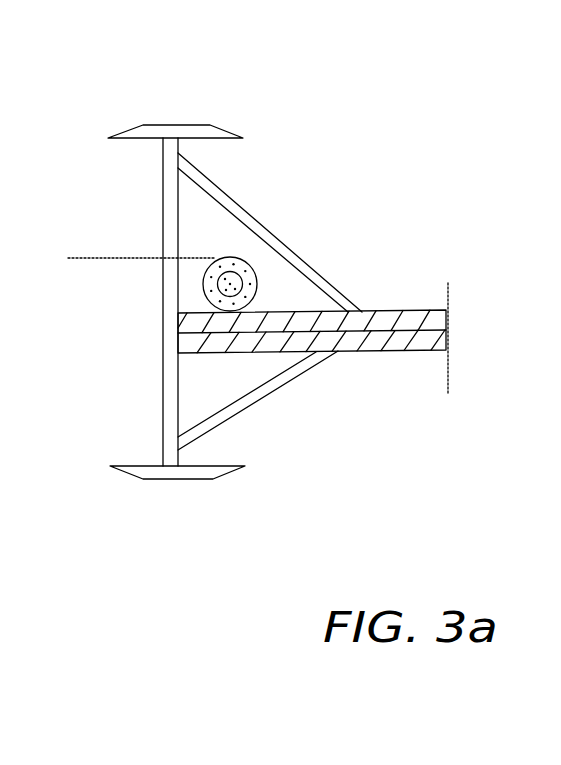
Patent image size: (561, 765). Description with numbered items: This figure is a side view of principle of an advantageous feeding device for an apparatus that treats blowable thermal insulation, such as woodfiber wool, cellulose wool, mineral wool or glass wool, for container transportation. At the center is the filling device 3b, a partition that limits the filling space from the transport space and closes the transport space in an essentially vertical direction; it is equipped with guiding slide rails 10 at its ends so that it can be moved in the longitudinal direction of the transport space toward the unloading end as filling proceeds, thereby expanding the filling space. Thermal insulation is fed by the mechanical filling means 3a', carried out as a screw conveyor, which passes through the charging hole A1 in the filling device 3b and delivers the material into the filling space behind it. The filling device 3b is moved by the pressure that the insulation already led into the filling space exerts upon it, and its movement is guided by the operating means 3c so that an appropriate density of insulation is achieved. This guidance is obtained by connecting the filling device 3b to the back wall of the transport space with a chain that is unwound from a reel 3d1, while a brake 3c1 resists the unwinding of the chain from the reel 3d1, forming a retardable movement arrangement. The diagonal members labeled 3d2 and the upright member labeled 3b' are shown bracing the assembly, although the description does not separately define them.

The hatched support arm 3a' is at (313, 410).
The lower diagonal strut 3b is at (258, 487).
The vertical bar 3b' is at (114, 302).
The pivot bearing 3c is at (254, 242).
The pivot pin 3c1 is at (254, 291).
The upper strut lower member 3d1 is at (267, 260).
The upper strut upper member 3d2 is at (204, 247).
The end flange 10 is at (200, 125).
The axis A1 is at (154, 348).